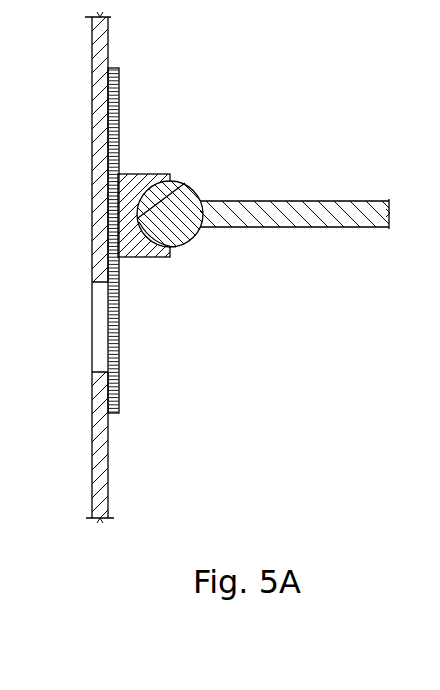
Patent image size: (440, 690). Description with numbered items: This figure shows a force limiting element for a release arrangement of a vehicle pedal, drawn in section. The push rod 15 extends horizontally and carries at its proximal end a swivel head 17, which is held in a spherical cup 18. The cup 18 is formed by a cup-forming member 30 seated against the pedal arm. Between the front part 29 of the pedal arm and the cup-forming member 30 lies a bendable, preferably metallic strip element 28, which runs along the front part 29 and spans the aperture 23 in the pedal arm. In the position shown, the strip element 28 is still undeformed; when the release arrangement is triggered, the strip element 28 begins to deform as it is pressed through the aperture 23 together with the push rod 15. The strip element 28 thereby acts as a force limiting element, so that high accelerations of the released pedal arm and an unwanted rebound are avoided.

The push rod 15 is at (283, 215).
The swivel head 17 is at (181, 188).
The spherical cup 18 is at (177, 250).
The aperture 23 is at (101, 332).
The strip element 28 is at (121, 386).
The front part 29 is at (98, 103).
The cup-forming member 30 is at (133, 182).